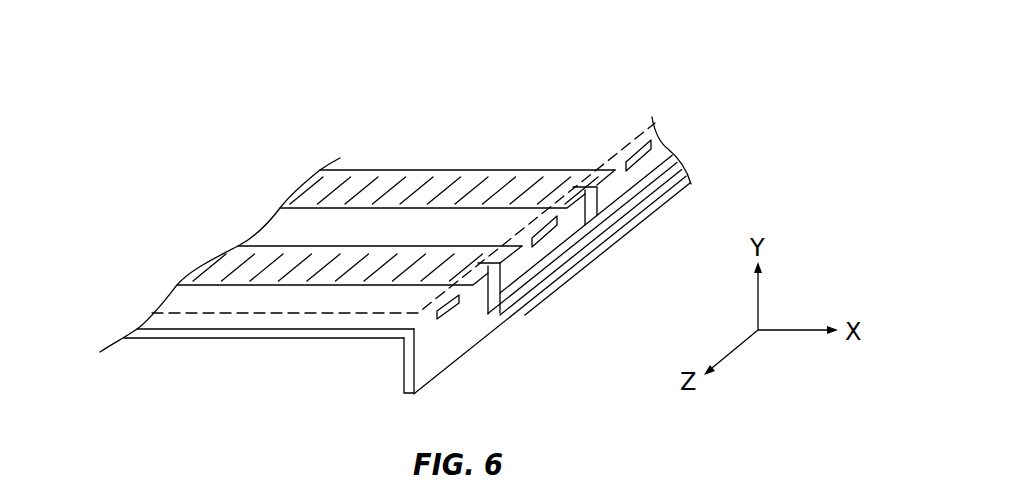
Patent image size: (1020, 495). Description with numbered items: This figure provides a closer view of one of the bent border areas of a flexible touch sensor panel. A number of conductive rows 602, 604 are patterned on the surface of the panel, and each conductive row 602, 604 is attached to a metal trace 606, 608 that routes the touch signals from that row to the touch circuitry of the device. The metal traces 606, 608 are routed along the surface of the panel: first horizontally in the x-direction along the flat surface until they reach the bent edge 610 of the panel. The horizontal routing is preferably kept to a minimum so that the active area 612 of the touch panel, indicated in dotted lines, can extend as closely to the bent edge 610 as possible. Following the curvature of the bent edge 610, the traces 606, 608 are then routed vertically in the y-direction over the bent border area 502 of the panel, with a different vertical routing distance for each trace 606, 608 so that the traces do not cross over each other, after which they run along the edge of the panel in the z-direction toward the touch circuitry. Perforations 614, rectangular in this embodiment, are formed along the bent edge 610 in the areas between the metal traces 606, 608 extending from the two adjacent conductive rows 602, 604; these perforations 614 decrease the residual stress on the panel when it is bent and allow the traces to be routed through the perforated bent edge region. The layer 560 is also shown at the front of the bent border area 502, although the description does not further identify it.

The bent border area 502 is at (460, 335).
The base layer 560 is at (195, 340).
The conductive row 602 is at (397, 170).
The conductive row 604 is at (272, 245).
The metal trace 606 is at (628, 190).
The metal trace 608 is at (540, 278).
The bent edge 610 is at (404, 343).
The active area 612 is at (308, 316).
The perforations 614 is at (642, 142).